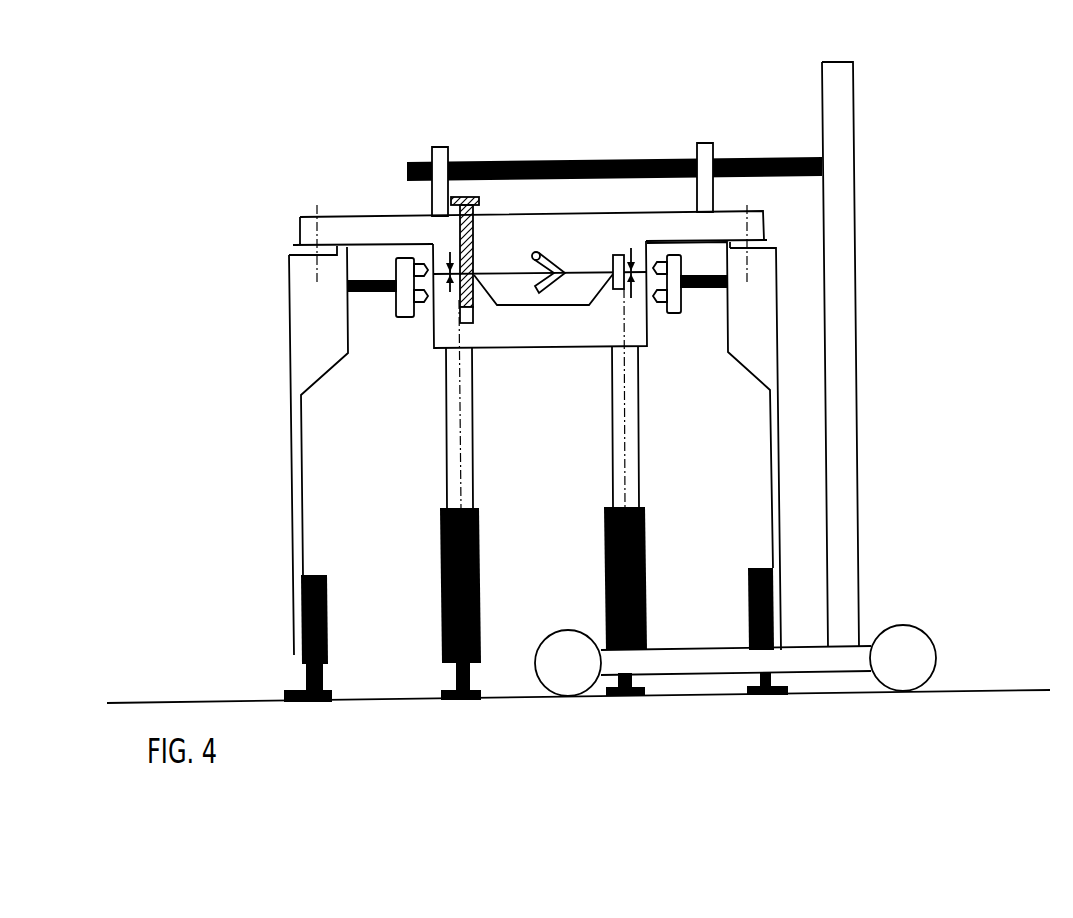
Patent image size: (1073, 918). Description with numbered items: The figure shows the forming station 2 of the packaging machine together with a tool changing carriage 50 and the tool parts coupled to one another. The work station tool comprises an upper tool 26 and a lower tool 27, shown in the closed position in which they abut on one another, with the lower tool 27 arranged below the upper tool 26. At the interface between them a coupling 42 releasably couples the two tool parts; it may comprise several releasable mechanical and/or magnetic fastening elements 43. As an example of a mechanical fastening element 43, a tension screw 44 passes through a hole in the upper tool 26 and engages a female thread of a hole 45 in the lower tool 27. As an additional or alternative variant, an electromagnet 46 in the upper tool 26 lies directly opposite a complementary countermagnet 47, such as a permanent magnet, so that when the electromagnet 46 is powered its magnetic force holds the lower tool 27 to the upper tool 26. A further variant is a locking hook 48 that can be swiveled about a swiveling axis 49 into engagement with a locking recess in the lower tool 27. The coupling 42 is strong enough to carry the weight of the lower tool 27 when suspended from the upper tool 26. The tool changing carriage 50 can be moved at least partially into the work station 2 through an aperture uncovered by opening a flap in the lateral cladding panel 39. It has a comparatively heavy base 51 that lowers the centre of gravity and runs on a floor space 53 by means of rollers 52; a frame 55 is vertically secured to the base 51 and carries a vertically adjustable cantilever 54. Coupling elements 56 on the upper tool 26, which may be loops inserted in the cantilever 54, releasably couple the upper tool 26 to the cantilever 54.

The forming station 2 is at (236, 172).
The upper tool 26 is at (375, 226).
The lower tool 27 is at (499, 338).
The cladding panel 39 is at (780, 415).
The coupling 42 is at (495, 261).
The fastening element 43 is at (473, 230).
The tension screw 44 is at (465, 201).
The hole 45 is at (474, 313).
The electromagnet 46 is at (610, 263).
The countermagnet 47 is at (620, 287).
The locking hook 48 is at (553, 258).
The swiveling axis 49 is at (534, 265).
The tool changing carriage 50 is at (854, 462).
The base 51 is at (694, 667).
The rollers 52 is at (924, 672).
The floor space 53 is at (1007, 688).
The cantilever 54 is at (752, 158).
The frame 55 is at (847, 233).
The coupling elements 56 is at (440, 147).